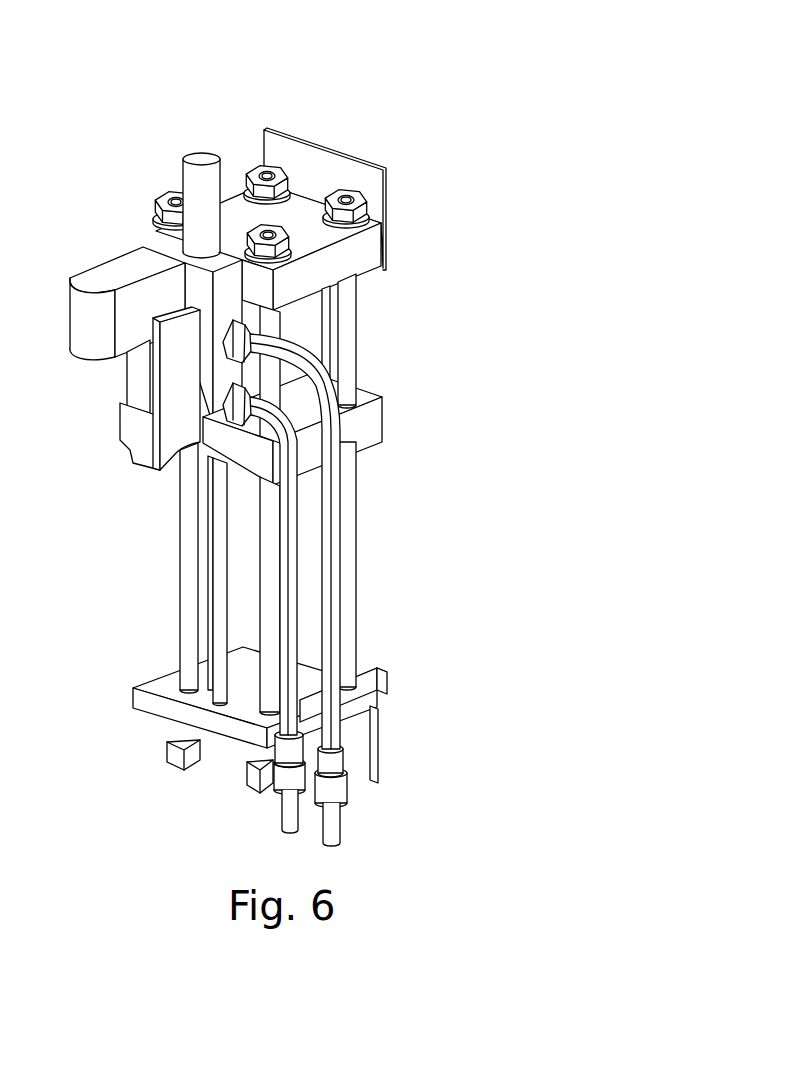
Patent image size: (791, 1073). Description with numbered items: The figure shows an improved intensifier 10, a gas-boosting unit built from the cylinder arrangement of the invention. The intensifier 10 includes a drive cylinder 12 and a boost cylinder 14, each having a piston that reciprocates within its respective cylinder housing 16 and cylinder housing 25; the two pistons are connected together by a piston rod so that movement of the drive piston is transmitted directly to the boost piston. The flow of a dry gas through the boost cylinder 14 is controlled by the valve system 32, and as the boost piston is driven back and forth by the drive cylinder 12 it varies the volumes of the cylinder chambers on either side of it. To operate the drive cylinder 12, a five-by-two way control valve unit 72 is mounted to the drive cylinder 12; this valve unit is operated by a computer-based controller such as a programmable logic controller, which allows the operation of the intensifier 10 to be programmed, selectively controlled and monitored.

The intensifier 10 is at (293, 433).
The drive cylinder 12 is at (430, 363).
The boost cylinder 14 is at (408, 603).
The cylinder housing 16 is at (348, 304).
The cylinder housing 25 is at (263, 598).
The valve system 32 is at (126, 772).
The 5/2 way control valve unit 72 is at (77, 228).